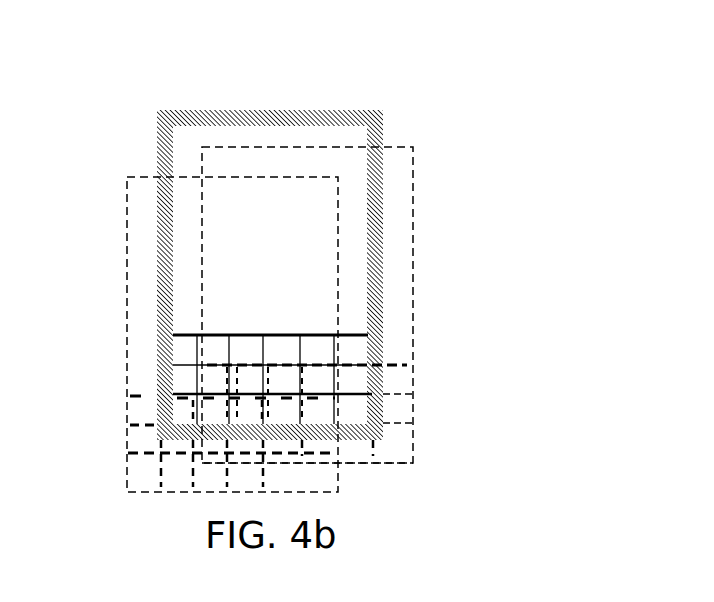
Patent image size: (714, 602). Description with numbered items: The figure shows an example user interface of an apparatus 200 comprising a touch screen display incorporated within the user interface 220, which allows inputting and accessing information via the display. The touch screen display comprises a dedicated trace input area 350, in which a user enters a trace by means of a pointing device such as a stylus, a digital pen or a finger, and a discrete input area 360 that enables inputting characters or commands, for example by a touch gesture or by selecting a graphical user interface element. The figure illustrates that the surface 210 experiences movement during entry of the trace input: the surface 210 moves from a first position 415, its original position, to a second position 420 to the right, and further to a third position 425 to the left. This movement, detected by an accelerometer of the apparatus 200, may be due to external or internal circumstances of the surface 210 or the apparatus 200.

The apparatus 200 is at (297, 110).
The first position 415 is at (378, 122).
The surface 210 is at (192, 334).
The user interface 220 is at (183, 260).
The trace input area 350 is at (292, 254).
The discrete input area 360 is at (182, 377).
The second position 420 is at (412, 415).
The third position 425 is at (330, 492).